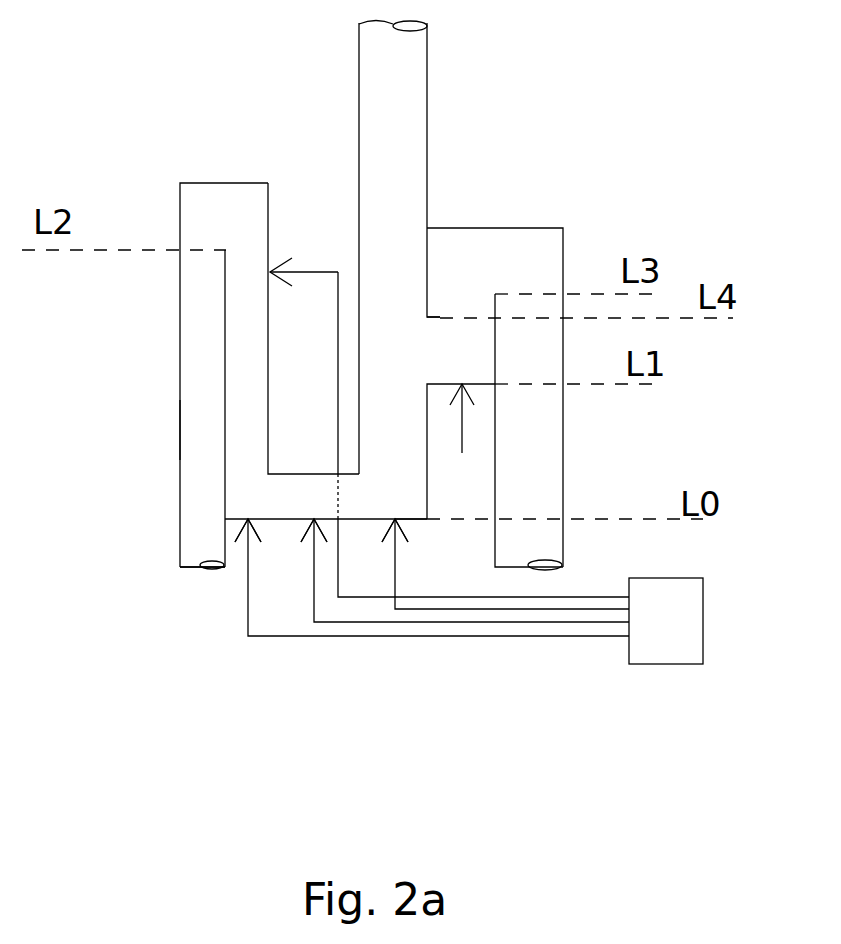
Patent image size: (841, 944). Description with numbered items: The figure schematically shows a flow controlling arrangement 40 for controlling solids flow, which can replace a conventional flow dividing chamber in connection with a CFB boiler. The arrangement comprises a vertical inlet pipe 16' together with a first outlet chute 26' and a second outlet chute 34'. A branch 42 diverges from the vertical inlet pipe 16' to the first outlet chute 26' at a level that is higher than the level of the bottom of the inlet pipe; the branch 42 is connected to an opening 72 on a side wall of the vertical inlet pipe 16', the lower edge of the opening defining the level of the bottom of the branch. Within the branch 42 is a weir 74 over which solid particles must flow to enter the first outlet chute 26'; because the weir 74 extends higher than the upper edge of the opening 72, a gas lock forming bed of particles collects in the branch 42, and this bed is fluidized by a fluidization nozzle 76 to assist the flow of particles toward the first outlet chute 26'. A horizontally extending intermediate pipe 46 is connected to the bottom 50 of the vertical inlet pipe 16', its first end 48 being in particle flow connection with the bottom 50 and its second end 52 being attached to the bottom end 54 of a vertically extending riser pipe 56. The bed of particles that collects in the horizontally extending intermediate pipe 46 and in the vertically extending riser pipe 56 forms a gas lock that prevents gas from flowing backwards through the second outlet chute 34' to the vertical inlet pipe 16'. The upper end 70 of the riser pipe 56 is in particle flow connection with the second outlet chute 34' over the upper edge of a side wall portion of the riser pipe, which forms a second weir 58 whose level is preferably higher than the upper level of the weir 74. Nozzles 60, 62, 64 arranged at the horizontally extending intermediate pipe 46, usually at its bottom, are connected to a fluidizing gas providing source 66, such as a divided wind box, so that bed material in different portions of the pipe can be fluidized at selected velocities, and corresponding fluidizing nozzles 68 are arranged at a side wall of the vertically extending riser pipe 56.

The flow controlling arrangement 40 is at (190, 120).
The vertical inlet pipe 16' is at (464, 246).
The first outlet chute 26' is at (645, 432).
The second outlet chute 34' is at (121, 409).
The upper end of the vertically extending riser pipe 70 is at (270, 210).
The fluidizing nozzles 68 is at (315, 268).
The opening 72 is at (428, 344).
The weir 74 is at (488, 312).
The branch 42 is at (478, 382).
The fluidization nozzle 76 is at (463, 432).
The vertically extending riser pipe 56 is at (247, 435).
The second weir 58 is at (228, 258).
The bottom end of the vertically extending riser pipe 54 is at (226, 521).
The nozzle 60 is at (247, 598).
The nozzle 62 is at (313, 607).
The nozzle 64 is at (397, 582).
The second end of the horizontally extending intermediate pipe 52 is at (272, 522).
The horizontally extending intermediate pipe 46 is at (287, 522).
The first end of the horizontally extending intermediate pipe 48 is at (380, 522).
The bottom of the vertical inlet pipe 50 is at (415, 521).
The fluidizing gas providing source 66 is at (677, 664).